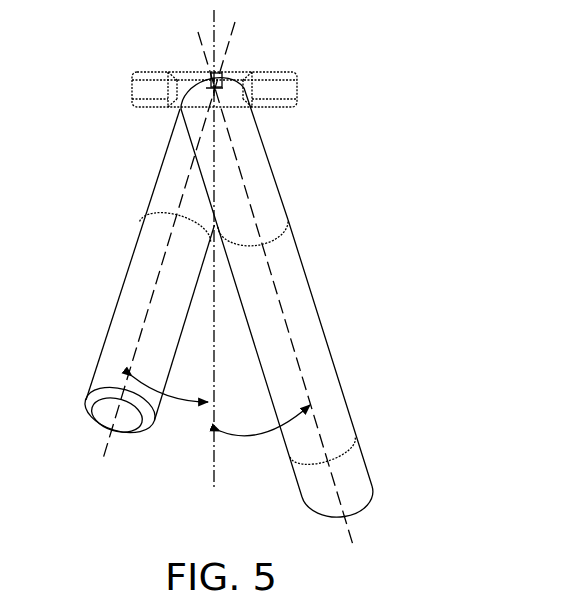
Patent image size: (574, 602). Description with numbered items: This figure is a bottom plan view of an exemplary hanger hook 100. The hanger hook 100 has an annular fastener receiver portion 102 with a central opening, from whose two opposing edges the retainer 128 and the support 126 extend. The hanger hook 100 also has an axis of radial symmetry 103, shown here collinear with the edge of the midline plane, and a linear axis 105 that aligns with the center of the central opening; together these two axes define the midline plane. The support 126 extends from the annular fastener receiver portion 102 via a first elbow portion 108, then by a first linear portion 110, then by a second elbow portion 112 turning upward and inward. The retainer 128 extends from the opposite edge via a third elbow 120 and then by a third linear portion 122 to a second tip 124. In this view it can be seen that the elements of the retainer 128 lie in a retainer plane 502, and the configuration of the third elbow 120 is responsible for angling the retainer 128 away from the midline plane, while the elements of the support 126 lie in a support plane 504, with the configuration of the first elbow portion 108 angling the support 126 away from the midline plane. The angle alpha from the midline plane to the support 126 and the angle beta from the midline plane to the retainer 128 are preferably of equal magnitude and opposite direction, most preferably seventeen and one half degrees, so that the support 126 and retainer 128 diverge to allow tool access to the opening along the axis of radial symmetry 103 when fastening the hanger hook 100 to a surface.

The hanger hook 100 is at (142, 36).
The annular fastener receiver portion 102 is at (288, 78).
The axis of radial symmetry 103 is at (216, 16).
The linear axis 105 is at (220, 73).
The first elbow portion 108 is at (265, 172).
The first linear portion 110 is at (304, 317).
The second elbow portion 112 is at (353, 466).
The third elbow 120 is at (168, 197).
The third linear portion 122 is at (152, 277).
The second tip 124 is at (102, 425).
The support 126 is at (362, 283).
The retainer 128 is at (110, 168).
The retainer plane 502 is at (233, 34).
The support plane 504 is at (200, 40).